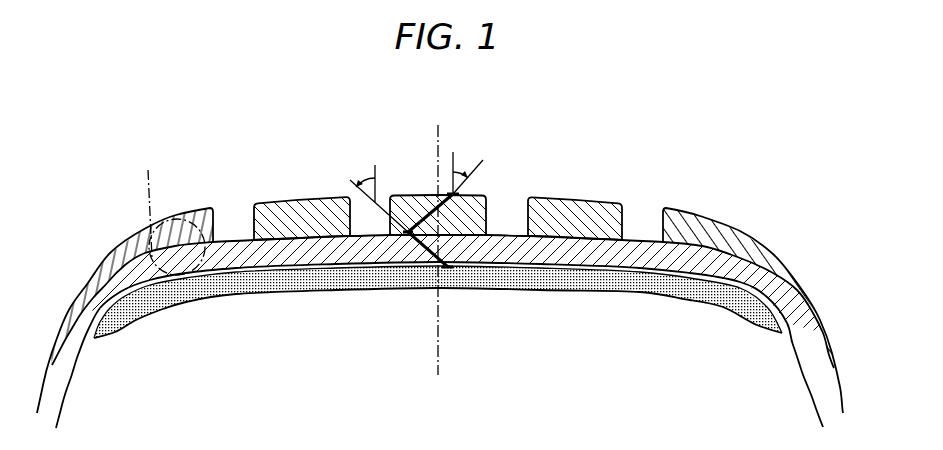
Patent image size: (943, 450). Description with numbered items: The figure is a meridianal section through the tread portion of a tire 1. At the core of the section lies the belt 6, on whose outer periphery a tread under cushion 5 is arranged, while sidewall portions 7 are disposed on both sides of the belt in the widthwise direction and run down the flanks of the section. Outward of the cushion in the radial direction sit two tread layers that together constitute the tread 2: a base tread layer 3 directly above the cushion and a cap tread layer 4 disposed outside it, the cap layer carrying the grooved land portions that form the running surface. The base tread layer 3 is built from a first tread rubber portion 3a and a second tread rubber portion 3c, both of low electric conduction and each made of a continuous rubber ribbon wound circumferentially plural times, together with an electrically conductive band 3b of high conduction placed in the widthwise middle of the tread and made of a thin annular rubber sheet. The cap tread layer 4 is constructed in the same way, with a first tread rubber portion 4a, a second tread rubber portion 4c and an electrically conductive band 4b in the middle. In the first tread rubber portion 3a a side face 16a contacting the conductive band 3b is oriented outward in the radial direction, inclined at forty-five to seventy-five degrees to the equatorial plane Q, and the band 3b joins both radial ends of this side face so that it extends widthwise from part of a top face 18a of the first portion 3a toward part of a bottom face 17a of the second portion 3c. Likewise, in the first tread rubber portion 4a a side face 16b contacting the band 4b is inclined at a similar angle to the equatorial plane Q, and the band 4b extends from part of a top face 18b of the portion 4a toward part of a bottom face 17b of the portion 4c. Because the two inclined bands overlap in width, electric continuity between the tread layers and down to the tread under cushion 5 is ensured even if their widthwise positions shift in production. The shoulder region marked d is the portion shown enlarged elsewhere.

The tire 1 is at (780, 233).
The tread 2 is at (697, 202).
The base tread layer 3 is at (765, 280).
The first tread rubber portion 3a is at (299, 247).
The electrically conductive band 3b is at (459, 255).
The second tread rubber portion 3c is at (573, 246).
The cap tread layer 4 is at (718, 232).
The first tread rubber portion 4a is at (577, 217).
The electrically conductive band 4b is at (461, 193).
The second tread rubber portion 4c is at (302, 222).
The tread under cushion 5 is at (645, 272).
The belt 6 is at (697, 297).
The sidewall portions 7 is at (823, 383).
The side face 16a is at (416, 250).
The side face 16b is at (463, 256).
The bottom face 17a is at (456, 262).
The bottom face 17b is at (418, 222).
The top face 18a is at (404, 237).
The top face 18b is at (452, 215).
The equatorial plane Q is at (437, 240).
The portion d is at (168, 210).